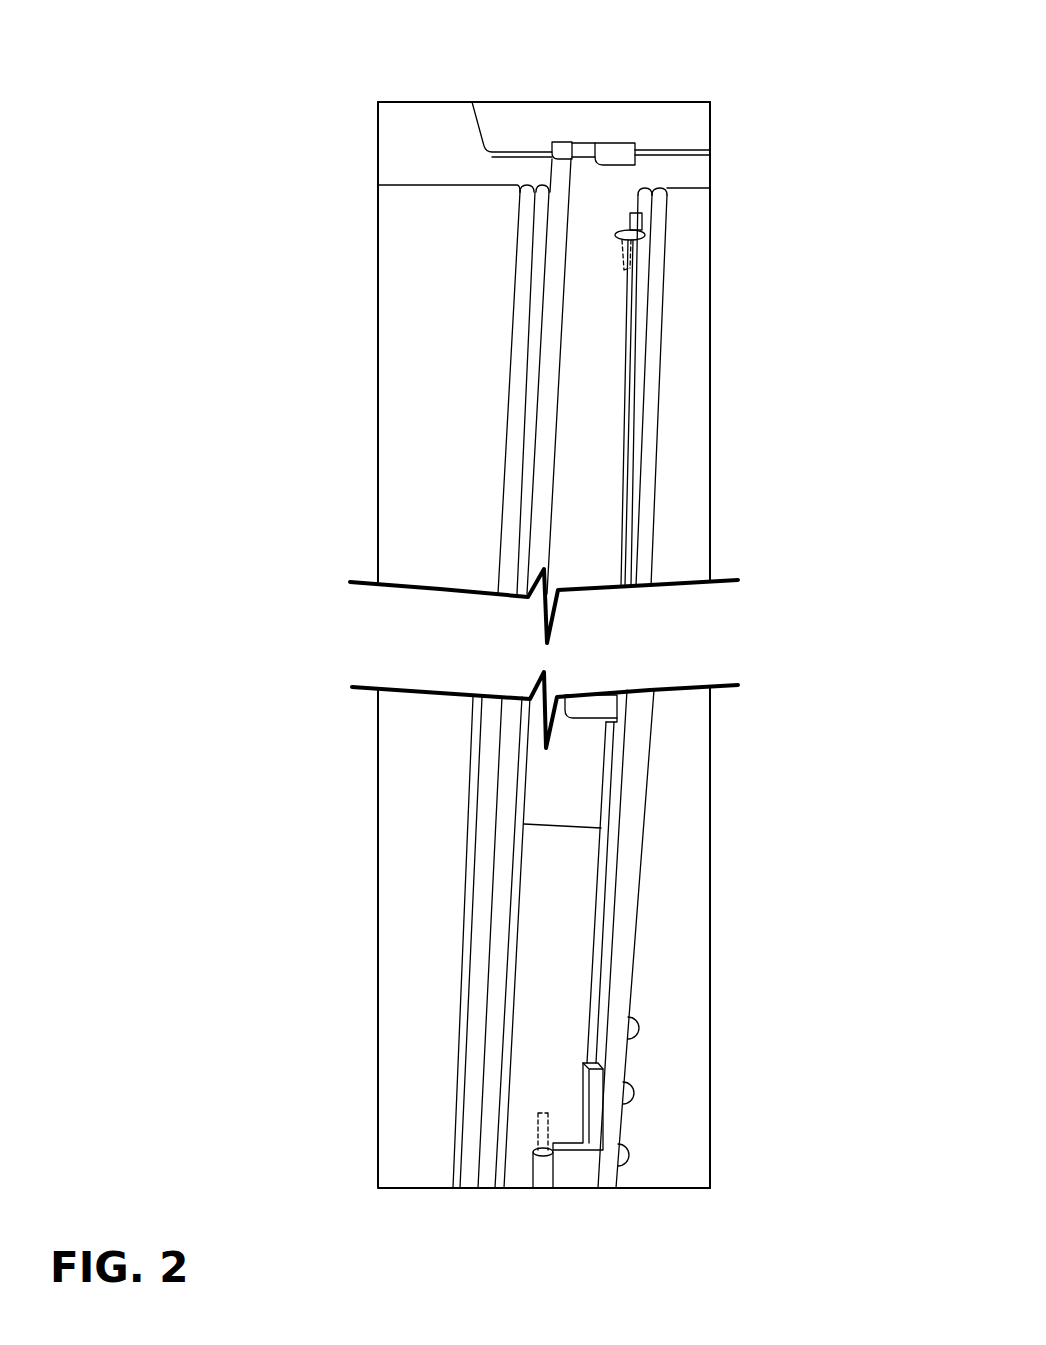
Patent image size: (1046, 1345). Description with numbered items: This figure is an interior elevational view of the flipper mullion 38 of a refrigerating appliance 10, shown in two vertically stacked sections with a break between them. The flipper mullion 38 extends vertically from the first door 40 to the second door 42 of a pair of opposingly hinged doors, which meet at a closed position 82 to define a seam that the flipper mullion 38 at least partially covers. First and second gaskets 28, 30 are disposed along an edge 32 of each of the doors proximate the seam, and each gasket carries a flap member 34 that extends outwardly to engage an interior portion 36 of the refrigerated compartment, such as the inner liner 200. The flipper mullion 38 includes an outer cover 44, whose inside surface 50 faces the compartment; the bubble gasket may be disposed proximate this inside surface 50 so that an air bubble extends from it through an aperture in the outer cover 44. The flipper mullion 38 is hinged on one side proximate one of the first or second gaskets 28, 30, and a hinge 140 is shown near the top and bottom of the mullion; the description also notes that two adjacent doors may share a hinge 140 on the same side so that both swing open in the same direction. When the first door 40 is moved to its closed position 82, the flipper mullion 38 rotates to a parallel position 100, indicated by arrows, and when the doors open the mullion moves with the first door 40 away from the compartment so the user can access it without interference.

The refrigerating appliance 10 is at (506, 56).
The closed position 82 is at (562, 90).
The outer cover 44 is at (604, 178).
The hinge 140 is at (621, 233).
The first door 40 is at (690, 233).
The second door 42 is at (417, 253).
The inner liner 200 is at (420, 342).
The inside surface 50 is at (603, 385).
The interior portion 36 is at (695, 377).
The first gasket 28 is at (650, 440).
The second gasket 30 is at (520, 490).
The flap member 34 is at (630, 485).
The edge 32 is at (645, 530).
The parallel position 100 is at (503, 606).
The flipper mullion 38 is at (590, 545).